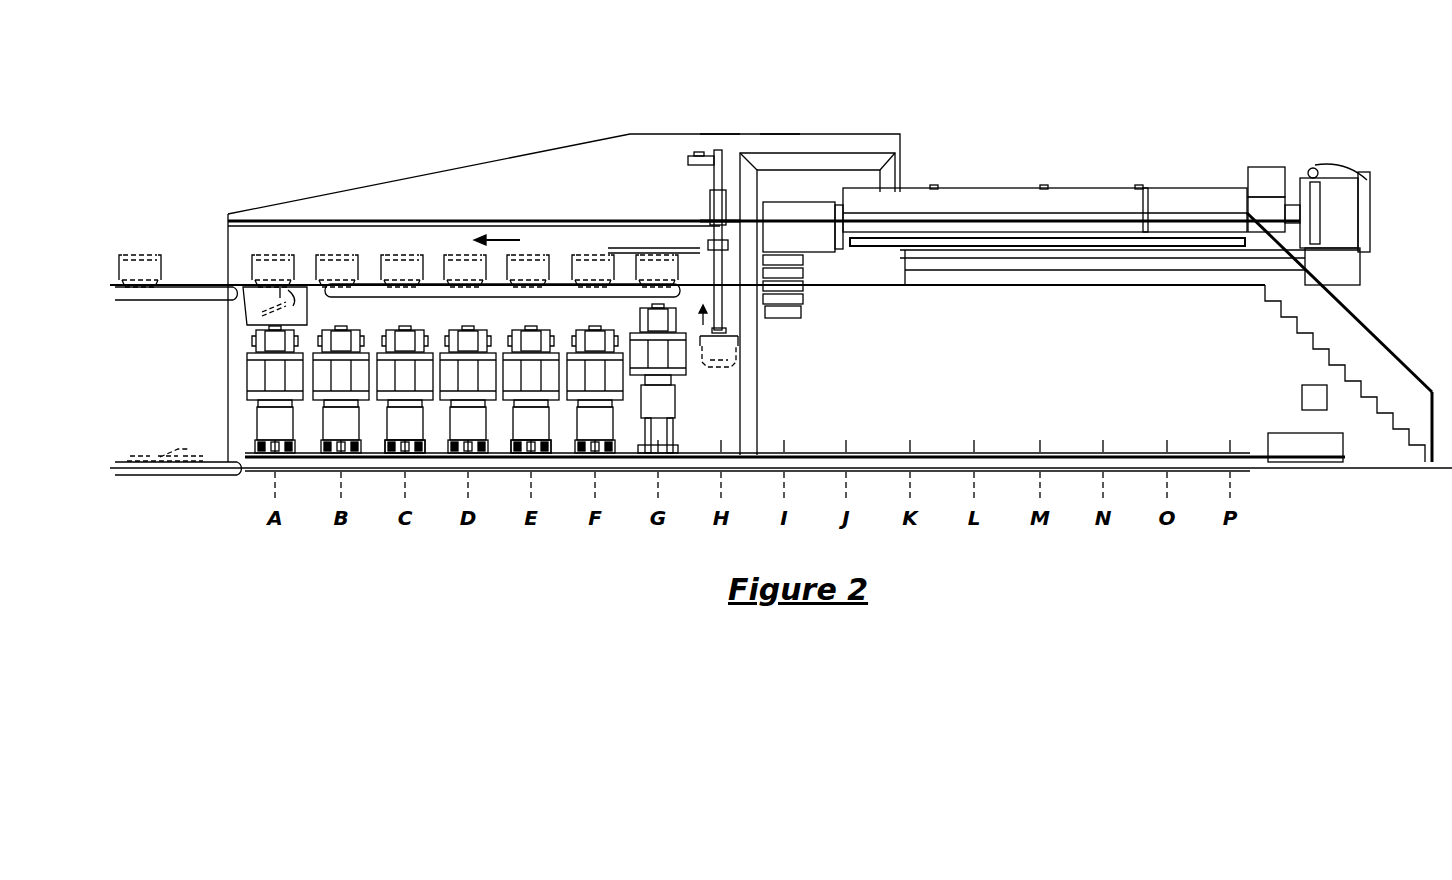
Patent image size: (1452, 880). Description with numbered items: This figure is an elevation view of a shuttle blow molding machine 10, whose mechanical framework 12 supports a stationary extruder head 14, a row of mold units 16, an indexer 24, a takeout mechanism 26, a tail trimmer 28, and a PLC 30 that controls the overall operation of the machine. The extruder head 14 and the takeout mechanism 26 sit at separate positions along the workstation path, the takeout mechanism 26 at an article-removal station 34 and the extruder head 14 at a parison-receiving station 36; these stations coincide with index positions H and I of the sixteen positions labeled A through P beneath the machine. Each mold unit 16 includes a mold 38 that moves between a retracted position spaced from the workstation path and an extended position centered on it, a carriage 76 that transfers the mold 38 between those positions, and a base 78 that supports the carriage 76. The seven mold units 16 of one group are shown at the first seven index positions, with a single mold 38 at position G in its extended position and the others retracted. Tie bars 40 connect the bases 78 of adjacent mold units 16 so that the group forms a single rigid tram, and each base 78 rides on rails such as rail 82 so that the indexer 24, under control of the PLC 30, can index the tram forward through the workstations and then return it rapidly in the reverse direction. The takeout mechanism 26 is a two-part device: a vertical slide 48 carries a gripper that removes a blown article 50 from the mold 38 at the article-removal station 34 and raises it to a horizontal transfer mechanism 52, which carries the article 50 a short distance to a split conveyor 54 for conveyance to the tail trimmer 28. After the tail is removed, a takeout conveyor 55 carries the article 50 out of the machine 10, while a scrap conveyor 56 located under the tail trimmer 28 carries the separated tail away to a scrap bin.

The shuttle blow molding machine 10 is at (1156, 150).
The mechanical framework 12 is at (228, 212).
The extruder head 14 is at (808, 201).
The mold unit 16 is at (384, 425).
The indexer 24 is at (1343, 445).
The takeout mechanism 26 is at (703, 150).
The tail trimmer 28 is at (228, 312).
The PLC 30 is at (1302, 395).
The article-removal station 34 is at (720, 127).
The parison-receiving station 36 is at (782, 127).
The mold 38 is at (245, 378).
The tie bar 40 is at (437, 447).
The vertical slide 48 is at (700, 190).
The blown article 50 is at (742, 340).
The horizontal transfer mechanism 52 is at (693, 247).
The split conveyor 54 is at (563, 284).
The takeout conveyor 55 is at (203, 285).
The scrap conveyor 56 is at (171, 477).
The carriage 76 is at (676, 400).
The base 78 is at (650, 430).
The rail 82 is at (1074, 459).